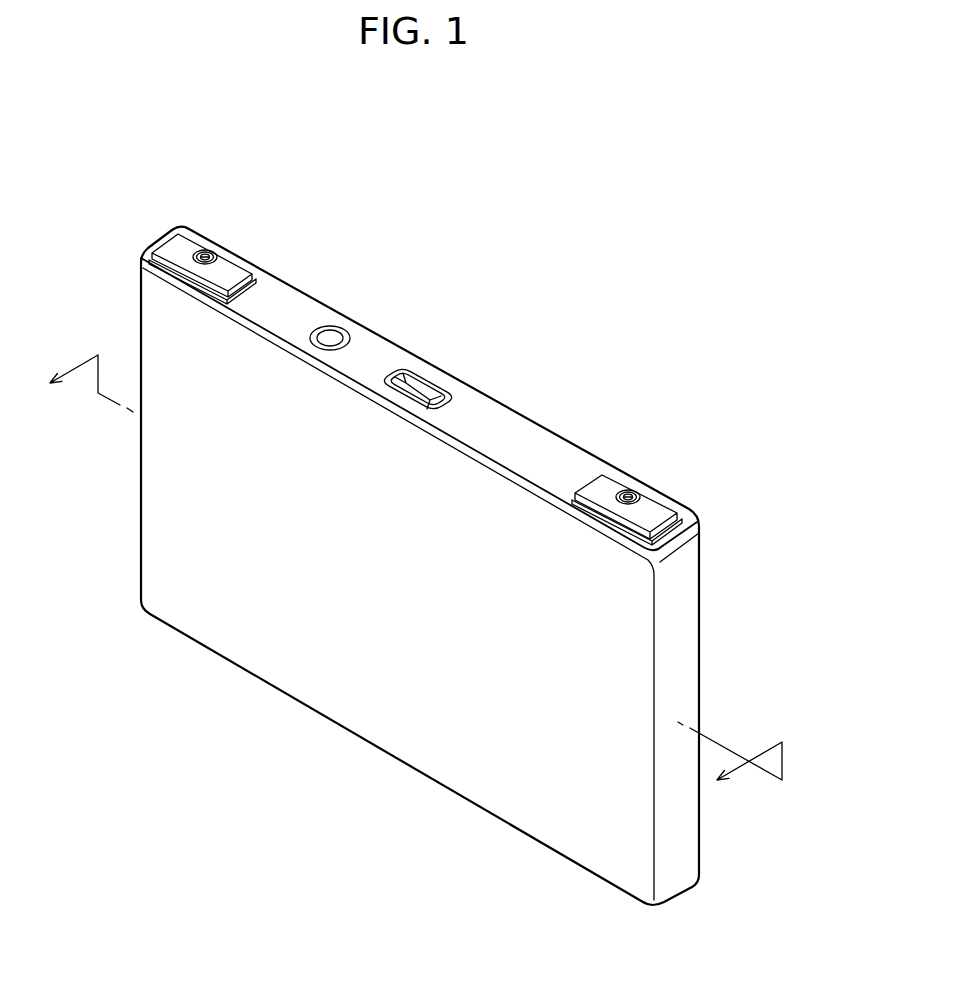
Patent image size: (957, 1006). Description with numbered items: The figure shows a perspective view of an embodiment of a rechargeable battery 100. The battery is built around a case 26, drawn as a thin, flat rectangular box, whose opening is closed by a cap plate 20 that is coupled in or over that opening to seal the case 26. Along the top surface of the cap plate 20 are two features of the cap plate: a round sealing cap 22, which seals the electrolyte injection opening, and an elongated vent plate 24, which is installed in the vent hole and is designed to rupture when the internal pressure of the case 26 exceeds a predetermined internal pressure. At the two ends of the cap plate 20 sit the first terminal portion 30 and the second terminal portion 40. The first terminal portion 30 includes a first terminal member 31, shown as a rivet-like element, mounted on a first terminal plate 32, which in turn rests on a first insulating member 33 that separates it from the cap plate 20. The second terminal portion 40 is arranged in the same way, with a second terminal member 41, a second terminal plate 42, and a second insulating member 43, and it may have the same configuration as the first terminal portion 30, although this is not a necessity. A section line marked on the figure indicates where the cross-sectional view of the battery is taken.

The rechargeable battery 100 is at (458, 181).
The cap plate 20 is at (507, 428).
The sealing cap 22 is at (330, 337).
The vent plate 24 is at (424, 387).
The case 26 is at (381, 718).
The first terminal portion 30 is at (225, 235).
The first terminal member 31 is at (214, 223).
The first terminal plate 32 is at (230, 266).
The first insulating member 33 is at (258, 278).
The second terminal portion 40 is at (650, 474).
The second terminal member 41 is at (638, 462).
The second terminal plate 42 is at (652, 508).
The second insulating member 43 is at (682, 516).